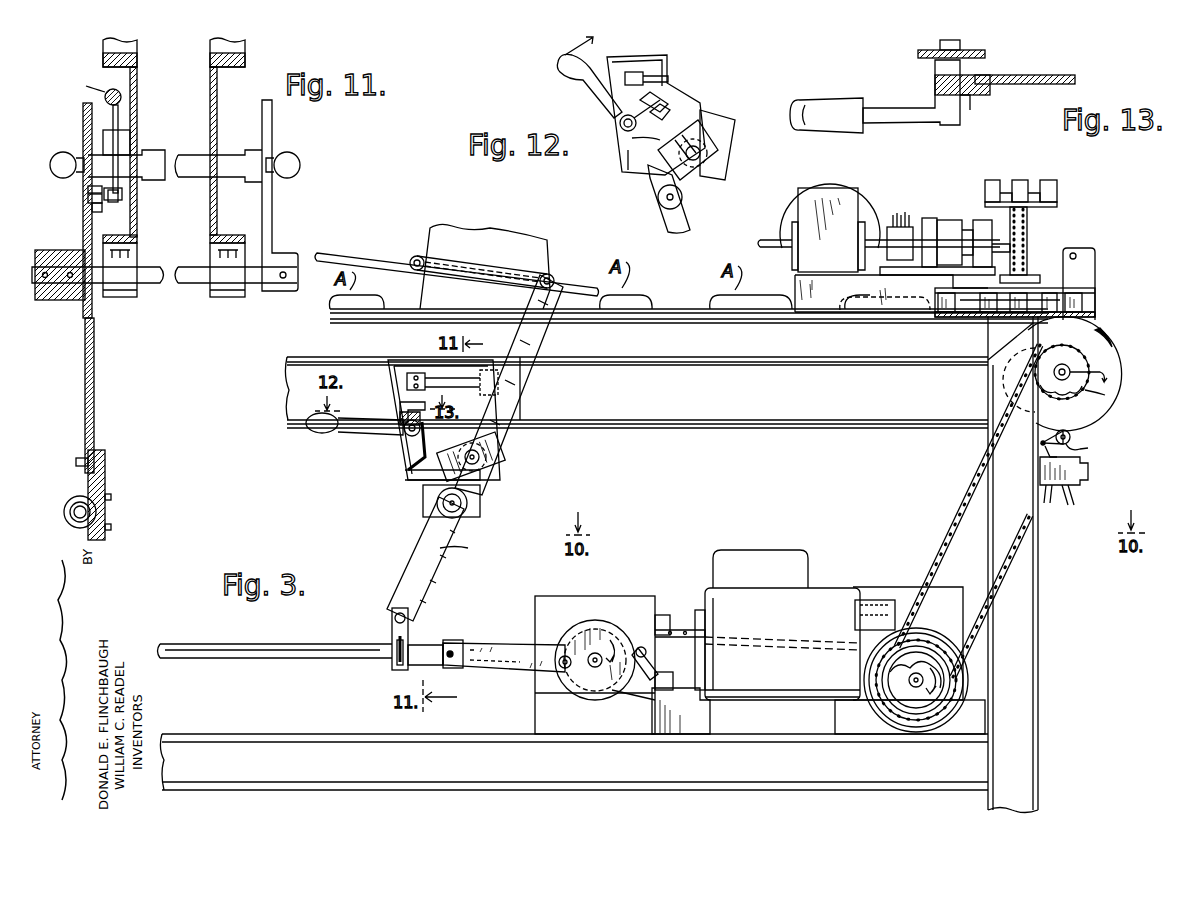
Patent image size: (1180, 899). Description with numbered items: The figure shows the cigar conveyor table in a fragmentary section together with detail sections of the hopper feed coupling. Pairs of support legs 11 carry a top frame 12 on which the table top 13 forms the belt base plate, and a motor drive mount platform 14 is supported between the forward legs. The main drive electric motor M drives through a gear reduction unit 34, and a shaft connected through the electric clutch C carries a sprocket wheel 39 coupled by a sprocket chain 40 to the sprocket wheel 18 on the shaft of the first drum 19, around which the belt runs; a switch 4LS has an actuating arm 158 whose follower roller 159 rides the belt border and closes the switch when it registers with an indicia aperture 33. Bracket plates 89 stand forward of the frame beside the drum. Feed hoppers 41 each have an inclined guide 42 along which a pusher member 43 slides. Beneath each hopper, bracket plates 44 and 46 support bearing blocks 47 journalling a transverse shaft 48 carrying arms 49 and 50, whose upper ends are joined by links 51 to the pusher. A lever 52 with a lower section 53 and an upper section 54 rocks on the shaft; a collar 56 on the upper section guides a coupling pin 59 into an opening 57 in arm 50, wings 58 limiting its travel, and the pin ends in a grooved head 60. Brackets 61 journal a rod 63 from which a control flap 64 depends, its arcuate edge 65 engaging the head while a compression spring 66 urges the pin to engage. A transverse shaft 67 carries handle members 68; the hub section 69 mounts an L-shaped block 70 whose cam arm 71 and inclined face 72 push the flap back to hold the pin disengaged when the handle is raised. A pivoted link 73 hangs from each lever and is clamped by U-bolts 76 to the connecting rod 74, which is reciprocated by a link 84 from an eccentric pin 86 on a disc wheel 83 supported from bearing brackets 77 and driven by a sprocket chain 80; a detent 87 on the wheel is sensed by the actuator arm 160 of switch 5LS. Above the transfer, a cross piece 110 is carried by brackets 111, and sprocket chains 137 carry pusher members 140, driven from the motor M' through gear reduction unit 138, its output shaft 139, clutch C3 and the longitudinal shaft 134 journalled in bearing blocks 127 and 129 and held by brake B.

In FIG. 3, the support legs 11 is at (1065, 630).
In FIG. 11, the top frame 12 is at (245, 45).
In FIG. 3, the table top 13 is at (988, 318).
In FIG. 3, the motor drive mount platform 14 is at (442, 780).
In FIG. 3, the sprocket wheel 18 is at (1096, 370).
In FIG. 3, the first drum 19 is at (1122, 382).
In FIG. 3, the indicia-defining apertures 33 is at (540, 410).
In FIG. 3, the gear reduction unit 34 is at (945, 588).
In FIG. 3, the sprocket wheel 39 is at (908, 695).
In FIG. 3, the sprocket chain 40 is at (940, 535).
In FIG. 3, the feed hoppers 41 is at (554, 270).
In FIG. 3, the inclined base or guide 42 is at (335, 245).
In FIG. 3, the pusher member 43 is at (540, 225).
In FIG. 11, the bracket plate 44 is at (160, 68).
In FIG. 12, the bracket plate 44 is at (630, 140).
In FIG. 3, the bracket plate 44 is at (392, 358).
In FIG. 11, the bracket plate 46 is at (217, 110).
In FIG. 11, the bearing blocks 47 is at (120, 297).
In FIG. 3, the bearing blocks 47 is at (480, 505).
In FIG. 11, the transverse shaft 48 is at (158, 285).
In FIG. 3, the transverse shaft 48 is at (443, 503).
In FIG. 11, the arm 49 is at (272, 140).
In FIG. 11, the arm 50 is at (80, 115).
In FIG. 12, the arm 50 is at (720, 120).
In FIG. 3, the arm 50 is at (538, 335).
In FIG. 3, the links 51 is at (482, 220).
In FIG. 11, the lever 52 is at (108, 410).
In FIG. 3, the lever 52 is at (448, 574).
In FIG. 11, the lower section 53 is at (94, 370).
In FIG. 12, the lower section 53 is at (650, 215).
In FIG. 3, the lower section 53 is at (463, 542).
In FIG. 11, the upper section 54 is at (55, 240).
In FIG. 11, the transverse collar 56 is at (86, 189).
In FIG. 11, the opening 57 is at (90, 208).
In FIG. 12, the wings 58 is at (700, 128).
In FIG. 3, the wings 58 is at (445, 475).
In FIG. 11, the coupling pin 59 is at (86, 200).
In FIG. 11, the peripherally grooved head 60 is at (122, 194).
In FIG. 12, the peripherally grooved head 60 is at (707, 153).
In FIG. 3, the peripherally grooved head 60 is at (486, 452).
In FIG. 11, the brackets 61 is at (121, 93).
In FIG. 12, the brackets 61 is at (640, 72).
In FIG. 3, the brackets 61 is at (407, 382).
In FIG. 11, the rod 63 is at (104, 90).
In FIG. 12, the rod 63 is at (668, 80).
In FIG. 3, the rod 63 is at (432, 372).
In FIG. 11, the swingable control flap 64 is at (108, 100).
In FIG. 12, the swingable control flap 64 is at (650, 108).
In FIG. 13, the swingable control flap 64 is at (1060, 75).
In FIG. 3, the swingable control flap 64 is at (405, 440).
In FIG. 12, the arcuate bottom edge 65 is at (640, 142).
In FIG. 3, the arcuate bottom edge 65 is at (430, 462).
In FIG. 11, the helical compression spring 66 is at (133, 145).
In FIG. 11, the transverse shaft 67 is at (233, 150).
In FIG. 11, the handle members 68 is at (52, 158).
In FIG. 12, the handle members 68 is at (582, 52).
In FIG. 13, the handle members 68 is at (875, 105).
In FIG. 3, the handle members 68 is at (318, 432).
In FIG. 13, the hub section 69 is at (935, 92).
In FIG. 11, the L-shaped block 70 is at (100, 118).
In FIG. 12, the L-shaped block 70 is at (664, 104).
In FIG. 3, the L-shaped block 70 is at (400, 418).
In FIG. 12, the cam arm 71 is at (665, 116).
In FIG. 13, the cam arm 71 is at (975, 110).
In FIG. 3, the cam arm 71 is at (400, 405).
In FIG. 13, the inclined face 72 is at (970, 75).
In FIG. 11, the pivoted link 73 is at (105, 470).
In FIG. 3, the pivoted link 73 is at (392, 630).
In FIG. 11, the connecting rod 74 is at (65, 518).
In FIG. 3, the connecting rod 74 is at (305, 648).
In FIG. 11, the U-bolts 76 is at (70, 500).
In FIG. 3, the U-bolts 76 is at (395, 668).
In FIG. 3, the bearing brackets 77 is at (570, 582).
In FIG. 3, the sprocket chain 80 is at (680, 615).
In FIG. 3, the disc wheel 83 is at (590, 622).
In FIG. 3, the link 84 is at (495, 622).
In FIG. 3, the pin 86 is at (560, 668).
In FIG. 3, the boss or detent 87 is at (635, 690).
In FIG. 3, the bracket plates 89 is at (1095, 256).
In FIG. 3, the cross piece 110 is at (960, 317).
In FIG. 3, the brackets 111 is at (940, 298).
In FIG. 3, the bearing block 127 is at (940, 204).
In FIG. 3, the bearing block 129 is at (980, 220).
In FIG. 3, the longitudinal shaft 134 is at (1030, 270).
In FIG. 3, the sprocket chains 137 is at (1027, 240).
In FIG. 3, the gear reduction unit 138 is at (798, 210).
In FIG. 3, the low speed output shaft 139 is at (890, 225).
In FIG. 3, the pusher members 140 is at (1057, 185).
In FIG. 3, the actuating arm 158 is at (1070, 446).
In FIG. 3, the follower roller 159 is at (1070, 432).
In FIG. 3, the actuator arm 160 is at (672, 664).
In FIG. 3, the switch 4LS is at (1088, 472).
In FIG. 3, the switch 5LS is at (710, 715).
In FIG. 3, the electrically-actuated brake B is at (948, 220).
In FIG. 3, the electric clutch C is at (968, 690).
In FIG. 3, the electrically actuated clutch C3 is at (906, 200).
In FIG. 3, the main drive electric motor M is at (782, 625).
In FIG. 3, the electric drive motor M' is at (891, 223).